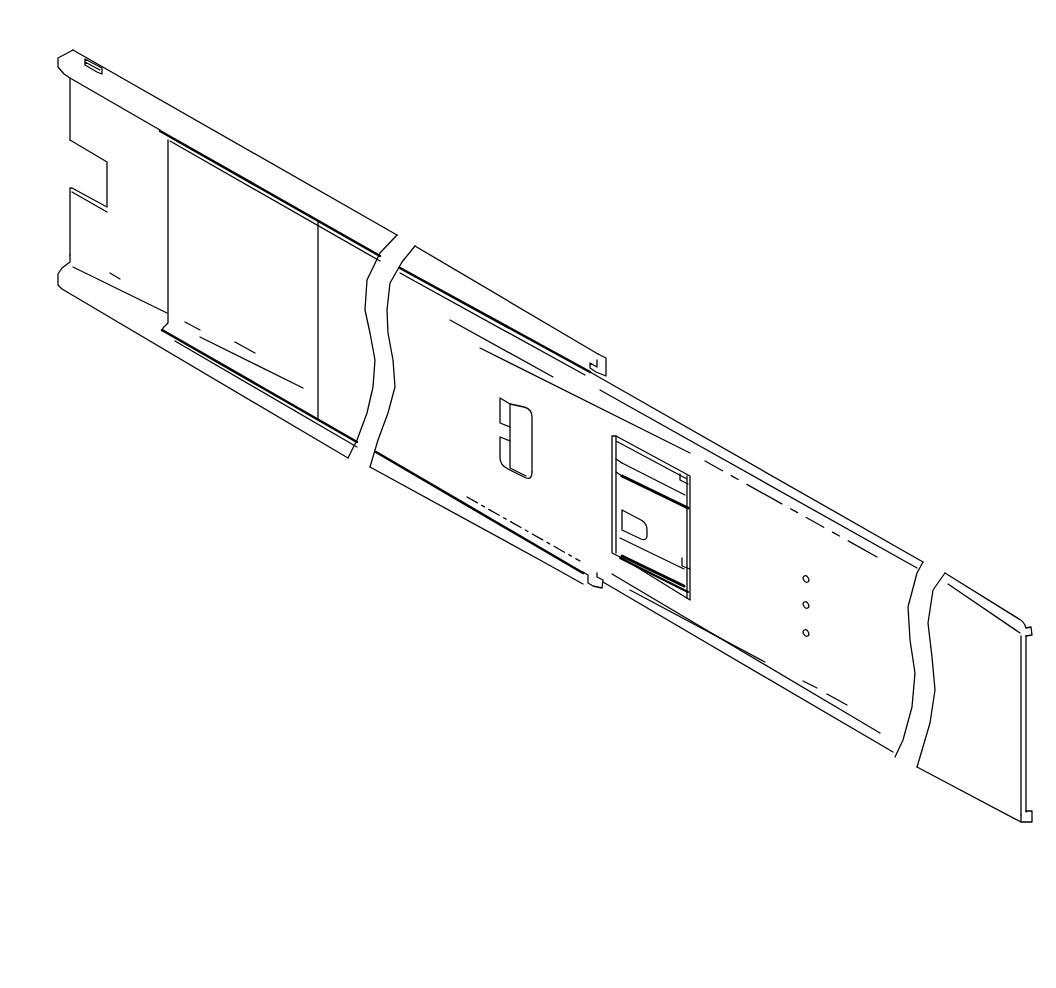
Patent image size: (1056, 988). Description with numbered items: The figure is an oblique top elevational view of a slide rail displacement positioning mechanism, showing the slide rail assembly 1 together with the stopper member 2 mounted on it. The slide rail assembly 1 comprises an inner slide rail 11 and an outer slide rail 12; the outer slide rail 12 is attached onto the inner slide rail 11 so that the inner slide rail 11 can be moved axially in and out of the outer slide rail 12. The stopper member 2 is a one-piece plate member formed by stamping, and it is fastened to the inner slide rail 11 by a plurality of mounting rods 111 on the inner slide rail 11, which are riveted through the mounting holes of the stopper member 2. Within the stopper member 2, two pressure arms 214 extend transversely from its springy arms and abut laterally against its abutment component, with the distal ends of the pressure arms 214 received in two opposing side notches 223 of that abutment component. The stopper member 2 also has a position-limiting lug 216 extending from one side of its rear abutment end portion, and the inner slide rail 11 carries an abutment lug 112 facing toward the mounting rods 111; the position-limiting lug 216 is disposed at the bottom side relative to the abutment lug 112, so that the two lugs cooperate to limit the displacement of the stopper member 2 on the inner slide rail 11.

The slide rail assembly 1 is at (557, 307).
The inner slide rail 11 is at (768, 474).
The mounting rods 111 is at (807, 638).
The abutment lug 112 is at (500, 415).
The outer slide rail 12 is at (477, 290).
The stopper member 2 is at (667, 580).
The pressure arms 214 is at (637, 531).
The position-limiting lug 216 is at (517, 446).
The side notches 223 is at (625, 465).